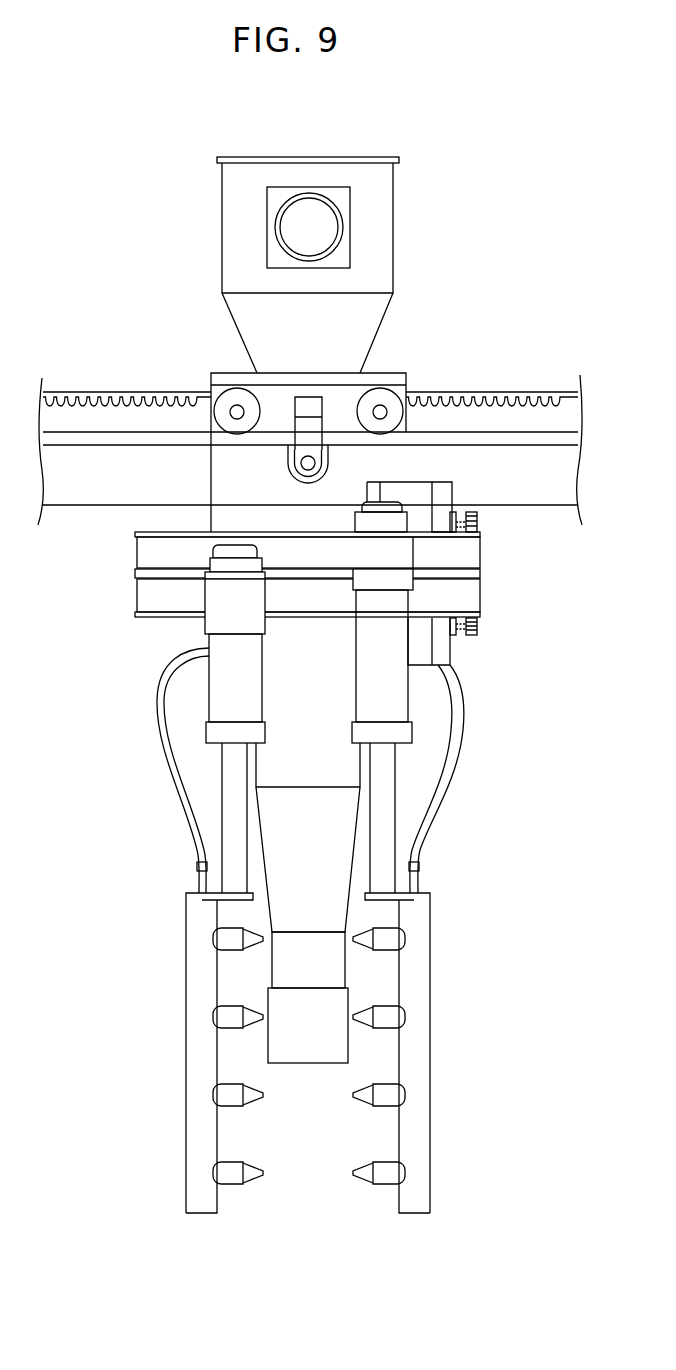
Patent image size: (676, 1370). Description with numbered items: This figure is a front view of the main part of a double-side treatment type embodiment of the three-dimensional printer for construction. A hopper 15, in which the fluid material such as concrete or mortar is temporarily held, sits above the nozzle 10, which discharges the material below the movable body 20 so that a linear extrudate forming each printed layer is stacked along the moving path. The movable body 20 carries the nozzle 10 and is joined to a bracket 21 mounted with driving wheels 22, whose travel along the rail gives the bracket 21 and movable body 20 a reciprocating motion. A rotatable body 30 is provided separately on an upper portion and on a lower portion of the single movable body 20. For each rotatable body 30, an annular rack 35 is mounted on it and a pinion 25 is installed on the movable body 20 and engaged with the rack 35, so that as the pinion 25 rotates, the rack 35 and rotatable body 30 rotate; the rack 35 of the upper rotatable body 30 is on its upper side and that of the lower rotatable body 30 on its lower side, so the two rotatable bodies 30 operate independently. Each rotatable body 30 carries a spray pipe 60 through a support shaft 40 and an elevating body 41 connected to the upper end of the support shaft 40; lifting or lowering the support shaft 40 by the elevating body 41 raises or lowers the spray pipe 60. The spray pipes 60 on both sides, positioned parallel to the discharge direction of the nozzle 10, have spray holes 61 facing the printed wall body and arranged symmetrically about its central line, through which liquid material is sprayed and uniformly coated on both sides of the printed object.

The nozzle 10 is at (332, 755).
The hopper 15 is at (230, 190).
The movable body 20 is at (137, 573).
The bracket 21 is at (211, 373).
The driving wheels 22 is at (380, 411).
The pinion 25 is at (477, 522).
The rotatable body 30 is at (137, 548).
The rack 35 is at (470, 538).
The support shaft 40 is at (232, 839).
The elevating body 41 is at (218, 693).
The spray pipe 60 is at (187, 986).
The spray holes 61 is at (362, 1184).